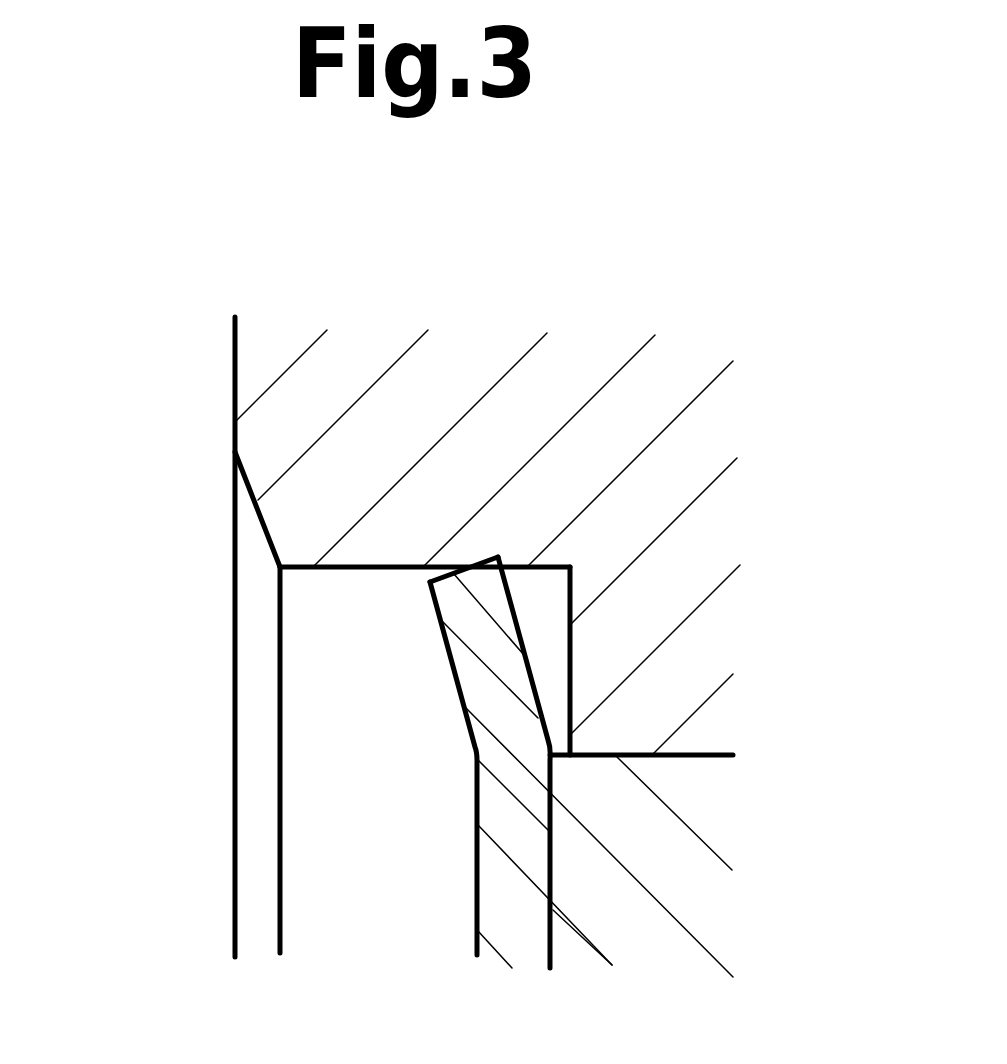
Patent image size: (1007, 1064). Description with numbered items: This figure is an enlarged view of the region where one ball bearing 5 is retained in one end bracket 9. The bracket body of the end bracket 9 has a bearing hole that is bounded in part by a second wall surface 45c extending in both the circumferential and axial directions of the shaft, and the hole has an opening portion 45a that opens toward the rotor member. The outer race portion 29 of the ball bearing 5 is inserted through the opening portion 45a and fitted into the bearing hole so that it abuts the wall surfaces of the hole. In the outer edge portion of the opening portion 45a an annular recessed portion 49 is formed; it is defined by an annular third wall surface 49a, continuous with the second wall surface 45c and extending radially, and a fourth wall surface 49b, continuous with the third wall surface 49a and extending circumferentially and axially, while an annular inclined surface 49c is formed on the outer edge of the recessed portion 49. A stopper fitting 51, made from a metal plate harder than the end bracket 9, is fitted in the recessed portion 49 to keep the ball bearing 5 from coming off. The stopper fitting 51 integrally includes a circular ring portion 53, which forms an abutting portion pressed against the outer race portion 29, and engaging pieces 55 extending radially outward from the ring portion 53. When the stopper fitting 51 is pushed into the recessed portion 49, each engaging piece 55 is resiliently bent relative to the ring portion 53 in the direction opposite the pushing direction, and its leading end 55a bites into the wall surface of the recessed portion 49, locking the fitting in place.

The ball bearing 5 is at (697, 897).
The end bracket 9 is at (715, 343).
The outer race portion 29 is at (635, 807).
The opening portion 45a is at (532, 930).
The second wall surface 45c is at (683, 757).
The recessed portion 49 is at (489, 591).
The third wall surface 49a is at (570, 590).
The fourth wall surface 49b is at (338, 567).
The inclined surface 49c is at (237, 488).
The stopper fitting 51 is at (447, 825).
The ring portion 53 is at (500, 868).
The engaging piece 55 is at (422, 616).
The leading end 55a is at (497, 556).